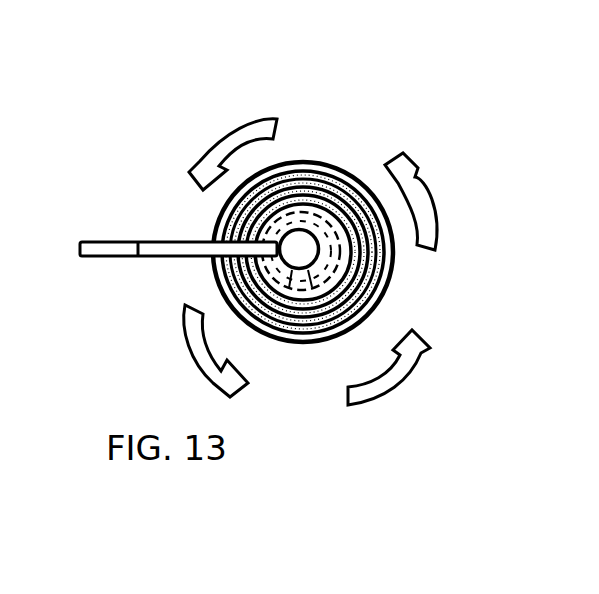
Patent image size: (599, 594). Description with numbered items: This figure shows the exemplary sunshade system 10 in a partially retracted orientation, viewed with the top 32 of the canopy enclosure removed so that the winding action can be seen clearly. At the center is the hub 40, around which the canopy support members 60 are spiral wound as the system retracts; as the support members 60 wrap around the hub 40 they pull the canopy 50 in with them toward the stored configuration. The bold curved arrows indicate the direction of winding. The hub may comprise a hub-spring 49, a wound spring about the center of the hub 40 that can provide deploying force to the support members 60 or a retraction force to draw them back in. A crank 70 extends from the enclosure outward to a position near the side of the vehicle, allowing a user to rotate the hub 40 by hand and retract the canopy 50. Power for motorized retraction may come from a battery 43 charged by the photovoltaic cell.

The sunshade system 10 is at (345, 110).
The top of the canopy enclosure 32 is at (397, 270).
The hub-spring 49 is at (280, 166).
The support members 60 is at (322, 164).
The canopy 50 is at (220, 212).
The hub 40 is at (300, 318).
The battery 43 is at (330, 335).
The crank 70 is at (84, 241).